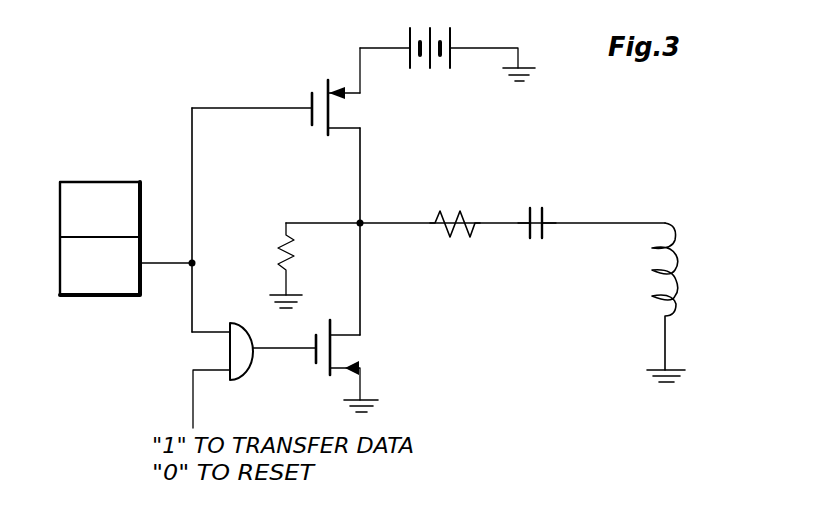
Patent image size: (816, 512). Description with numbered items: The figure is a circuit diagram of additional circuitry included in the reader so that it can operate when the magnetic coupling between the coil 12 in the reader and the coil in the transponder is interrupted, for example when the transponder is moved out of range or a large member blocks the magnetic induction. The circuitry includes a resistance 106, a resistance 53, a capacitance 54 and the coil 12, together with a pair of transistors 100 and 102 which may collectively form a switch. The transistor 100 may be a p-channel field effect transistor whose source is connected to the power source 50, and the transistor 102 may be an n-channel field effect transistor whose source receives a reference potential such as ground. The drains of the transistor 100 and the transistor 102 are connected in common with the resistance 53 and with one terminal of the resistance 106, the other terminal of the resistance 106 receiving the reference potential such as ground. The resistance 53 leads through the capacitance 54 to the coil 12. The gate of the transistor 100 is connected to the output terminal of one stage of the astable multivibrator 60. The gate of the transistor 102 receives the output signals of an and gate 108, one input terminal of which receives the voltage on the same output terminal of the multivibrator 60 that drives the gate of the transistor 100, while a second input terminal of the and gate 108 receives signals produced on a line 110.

The astable multivibrator 60 is at (134, 146).
The transistor 100 is at (355, 112).
The power source 50 is at (406, 42).
The resistance 106 is at (280, 262).
The resistance 53 is at (449, 211).
The capacitance 54 is at (552, 176).
The coil 12 is at (683, 264).
The and gate 108 is at (256, 346).
The transistor 102 is at (344, 358).
The line 110 is at (194, 404).